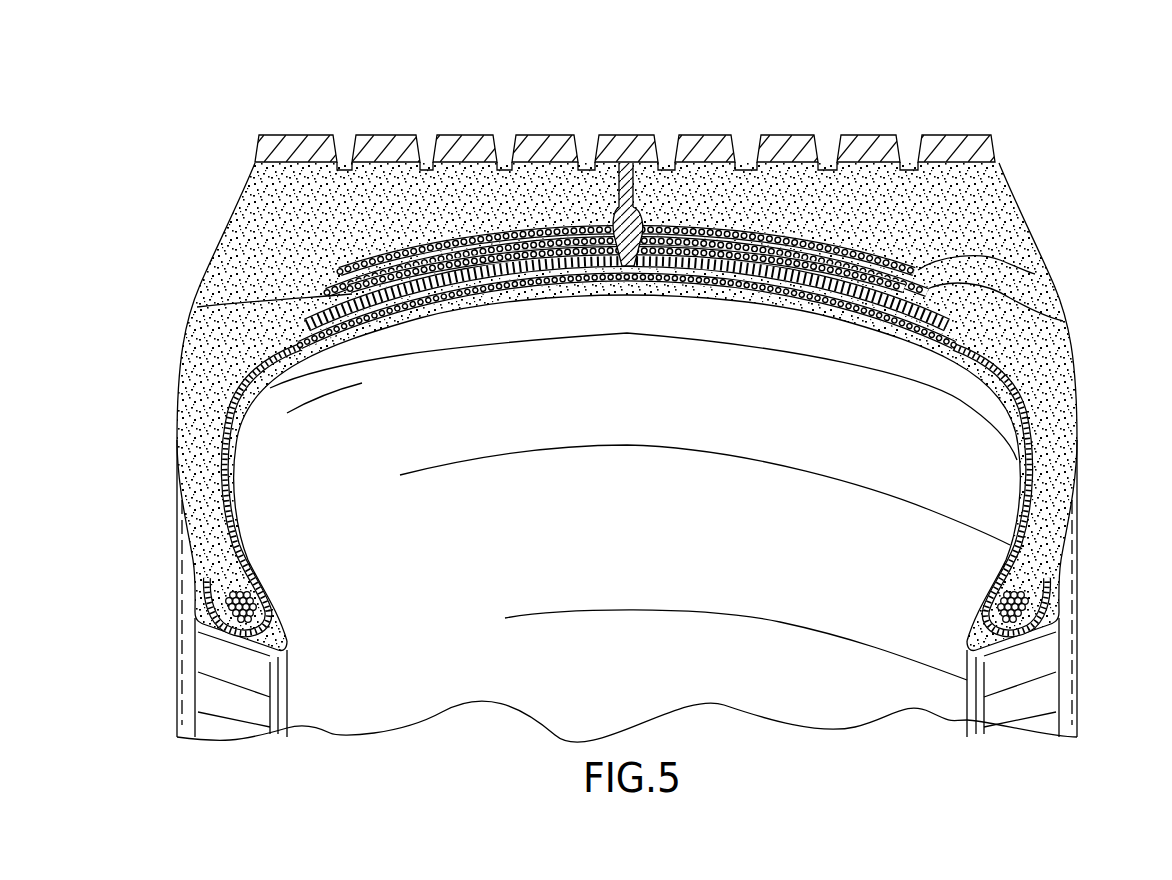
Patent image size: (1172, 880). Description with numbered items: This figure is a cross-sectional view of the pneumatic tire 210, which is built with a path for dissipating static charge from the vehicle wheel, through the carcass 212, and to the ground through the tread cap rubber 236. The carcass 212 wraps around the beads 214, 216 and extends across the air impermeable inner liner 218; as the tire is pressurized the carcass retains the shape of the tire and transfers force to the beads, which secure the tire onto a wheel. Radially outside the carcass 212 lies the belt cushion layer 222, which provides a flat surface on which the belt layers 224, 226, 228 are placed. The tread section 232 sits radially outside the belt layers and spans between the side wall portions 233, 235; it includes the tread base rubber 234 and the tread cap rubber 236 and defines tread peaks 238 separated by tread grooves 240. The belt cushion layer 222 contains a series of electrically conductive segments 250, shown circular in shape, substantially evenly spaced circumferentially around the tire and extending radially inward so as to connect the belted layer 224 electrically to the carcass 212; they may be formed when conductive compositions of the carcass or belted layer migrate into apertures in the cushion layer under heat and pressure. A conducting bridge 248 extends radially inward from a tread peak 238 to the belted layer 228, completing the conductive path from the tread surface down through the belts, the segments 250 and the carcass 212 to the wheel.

The pneumatic tire 210 is at (773, 66).
The carcass 212 is at (232, 517).
The bead 214 is at (257, 593).
The bead 216 is at (997, 592).
The inner liner 218 is at (228, 443).
The belt cushion layer 222 is at (922, 300).
The belt layer 224 is at (207, 305).
The belt layer 226 is at (1063, 321).
The belt layer 228 is at (1035, 274).
The tread section 232 is at (217, 163).
The side wall portion 233 is at (202, 278).
The tread base rubber 234 is at (270, 197).
The side wall portion 235 is at (1027, 228).
The tread cap rubber 236 is at (297, 137).
The tread peak 238 is at (1000, 137).
The tread groove 240 is at (908, 136).
The conducting bridge 248 is at (628, 190).
The electrically conductive segments 250 is at (628, 266).